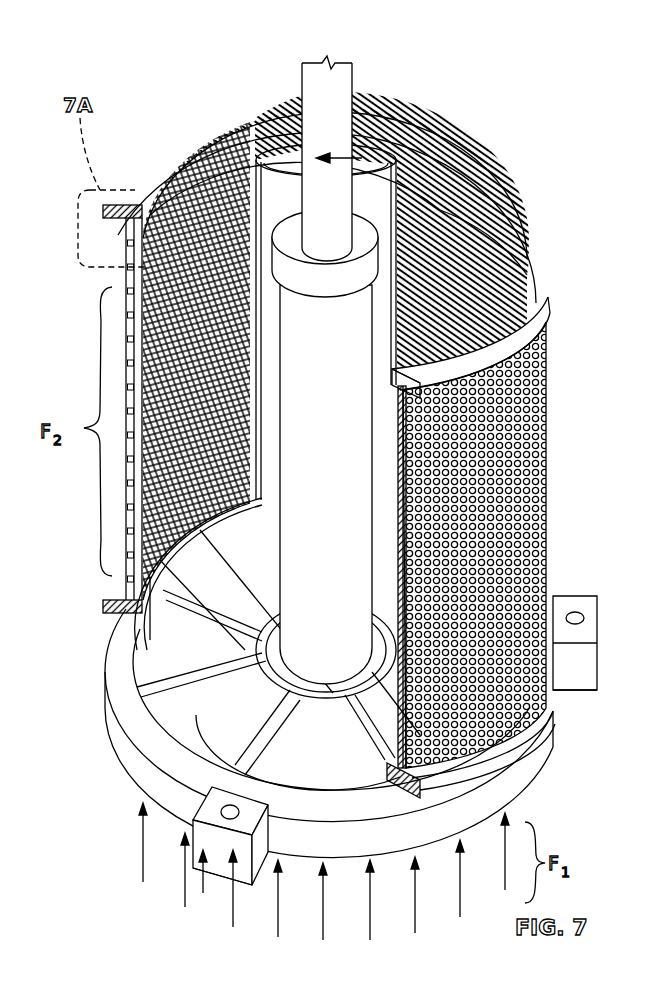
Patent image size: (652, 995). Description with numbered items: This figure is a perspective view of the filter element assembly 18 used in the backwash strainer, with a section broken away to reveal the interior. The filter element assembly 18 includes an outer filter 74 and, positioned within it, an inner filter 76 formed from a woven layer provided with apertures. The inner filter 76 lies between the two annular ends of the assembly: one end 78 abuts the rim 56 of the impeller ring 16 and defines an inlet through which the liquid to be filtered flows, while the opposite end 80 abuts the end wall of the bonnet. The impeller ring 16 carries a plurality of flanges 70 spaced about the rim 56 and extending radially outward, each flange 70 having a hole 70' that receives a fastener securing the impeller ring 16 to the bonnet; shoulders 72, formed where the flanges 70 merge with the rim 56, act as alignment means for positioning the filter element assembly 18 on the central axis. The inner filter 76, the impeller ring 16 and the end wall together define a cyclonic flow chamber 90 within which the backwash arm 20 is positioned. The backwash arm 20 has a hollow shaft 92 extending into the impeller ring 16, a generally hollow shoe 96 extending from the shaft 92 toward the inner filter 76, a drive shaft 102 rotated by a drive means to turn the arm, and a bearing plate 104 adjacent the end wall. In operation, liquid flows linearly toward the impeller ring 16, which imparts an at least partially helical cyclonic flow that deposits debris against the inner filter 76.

The impeller ring 16 is at (527, 758).
The filter element assembly 18 is at (540, 306).
The backwash arm 20 is at (418, 128).
The rim 56 is at (152, 741).
The flanges 70 is at (422, 783).
The hole 70' is at (432, 767).
The shoulders 72 is at (560, 603).
The outer filter 74 is at (545, 380).
The inner filter 76 is at (390, 158).
The end 78 is at (513, 717).
The opposite end 80 is at (264, 79).
The cyclonic flow chamber 90 is at (185, 142).
The shaft 92 is at (363, 253).
The shoe 96 is at (228, 118).
The drive shaft 102 is at (342, 92).
The bearing plate 104 is at (500, 222).